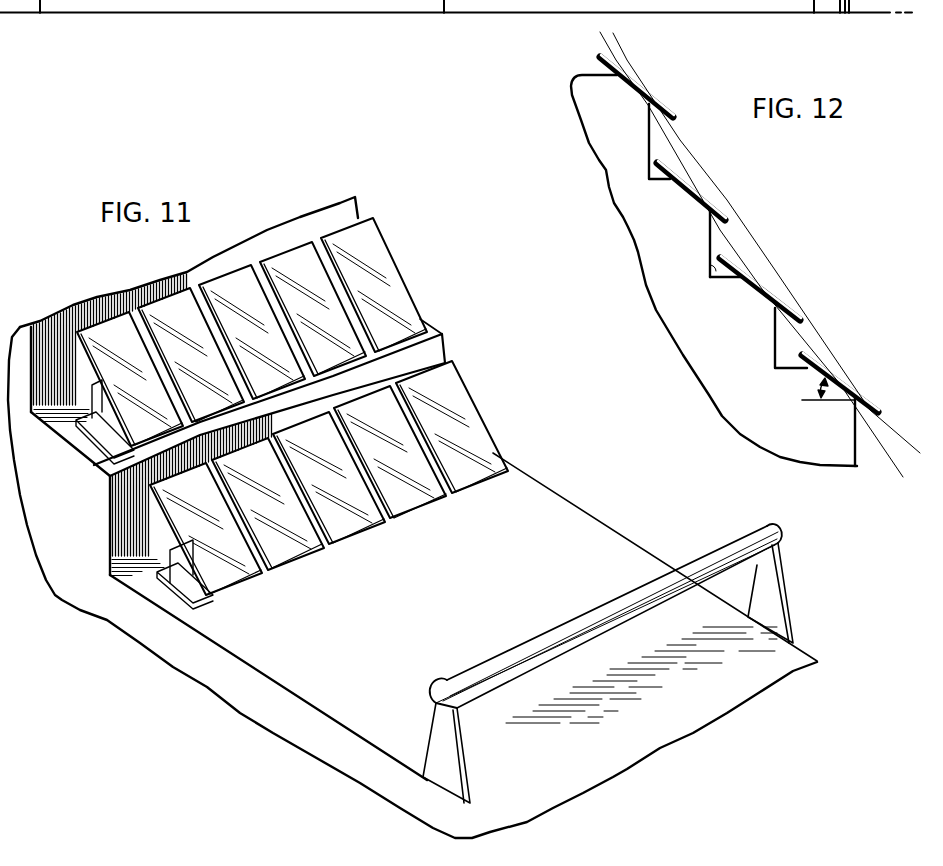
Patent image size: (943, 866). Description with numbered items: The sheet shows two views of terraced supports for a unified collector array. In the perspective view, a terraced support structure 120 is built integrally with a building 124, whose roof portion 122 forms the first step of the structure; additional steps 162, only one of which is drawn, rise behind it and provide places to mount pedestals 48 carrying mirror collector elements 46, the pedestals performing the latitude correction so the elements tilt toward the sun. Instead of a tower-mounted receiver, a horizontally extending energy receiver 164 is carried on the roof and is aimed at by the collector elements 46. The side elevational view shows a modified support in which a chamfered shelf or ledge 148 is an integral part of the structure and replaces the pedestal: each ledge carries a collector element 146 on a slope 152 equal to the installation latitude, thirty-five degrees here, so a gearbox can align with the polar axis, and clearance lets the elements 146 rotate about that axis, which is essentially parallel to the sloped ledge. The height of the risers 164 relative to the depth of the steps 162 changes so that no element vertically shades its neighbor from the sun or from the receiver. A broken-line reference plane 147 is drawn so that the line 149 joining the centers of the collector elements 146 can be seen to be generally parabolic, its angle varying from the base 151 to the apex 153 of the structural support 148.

In FIG. 11, the terraced support structure 120 is at (418, 303).
In FIG. 11, the collector element 46 is at (148, 396).
In FIG. 11, the pedestal 48 is at (100, 415).
In FIG. 11, the step 162 is at (101, 459).
In FIG. 12, the step 162 is at (710, 267).
In FIG. 11, the building 124 is at (62, 573).
In FIG. 11, the roof portion 122 is at (412, 612).
In FIG. 11, the energy receiver 164 is at (540, 640).
In FIG. 12, the energy receiver 164 is at (708, 240).
In FIG. 12, the line connecting centers of collector elements 149 is at (597, 35).
In FIG. 12, the apex 153 is at (603, 98).
In FIG. 12, the reference plane 147 is at (689, 158).
In FIG. 12, the collector element 146 is at (714, 200).
In FIG. 12, the chamfered shelf or ledge 148 is at (656, 259).
In FIG. 12, the slope 152 is at (757, 295).
In FIG. 12, the base 151 is at (779, 382).